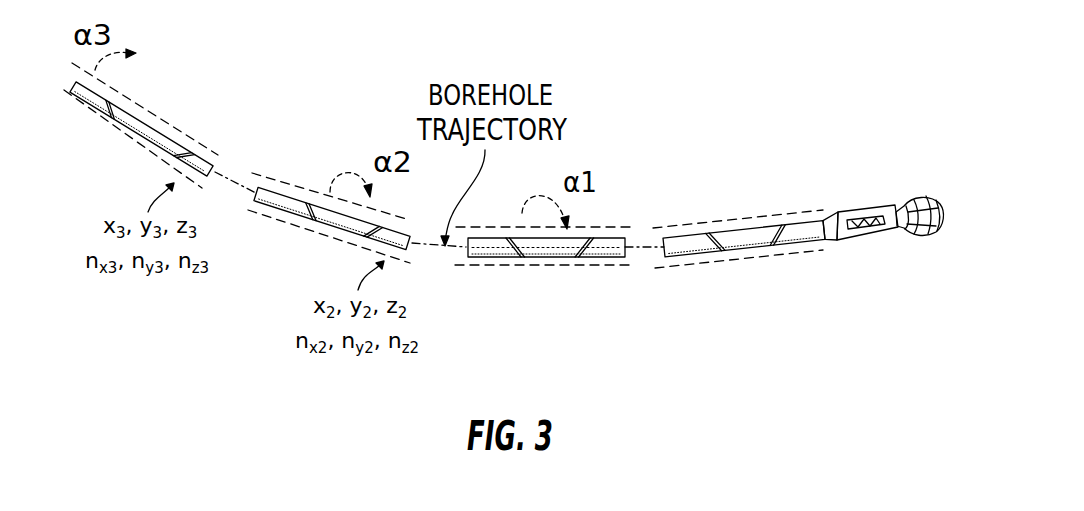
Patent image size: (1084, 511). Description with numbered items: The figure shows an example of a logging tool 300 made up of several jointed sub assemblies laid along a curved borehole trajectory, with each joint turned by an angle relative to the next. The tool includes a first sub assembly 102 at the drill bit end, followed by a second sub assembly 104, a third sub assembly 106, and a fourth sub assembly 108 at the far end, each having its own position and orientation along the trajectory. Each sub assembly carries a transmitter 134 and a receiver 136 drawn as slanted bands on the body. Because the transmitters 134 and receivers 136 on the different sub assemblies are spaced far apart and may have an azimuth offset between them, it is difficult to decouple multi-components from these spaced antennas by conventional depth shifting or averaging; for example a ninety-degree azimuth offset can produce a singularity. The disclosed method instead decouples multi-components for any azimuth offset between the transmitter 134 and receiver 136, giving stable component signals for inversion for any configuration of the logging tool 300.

The logging tool 300 is at (866, 54).
The first sub assembly 102 is at (738, 228).
The second sub assembly 104 is at (608, 238).
The third sub assembly 106 is at (283, 187).
The fourth sub assembly 108 is at (146, 124).
The transmitter 134 is at (108, 120).
The receiver 136 is at (188, 146).